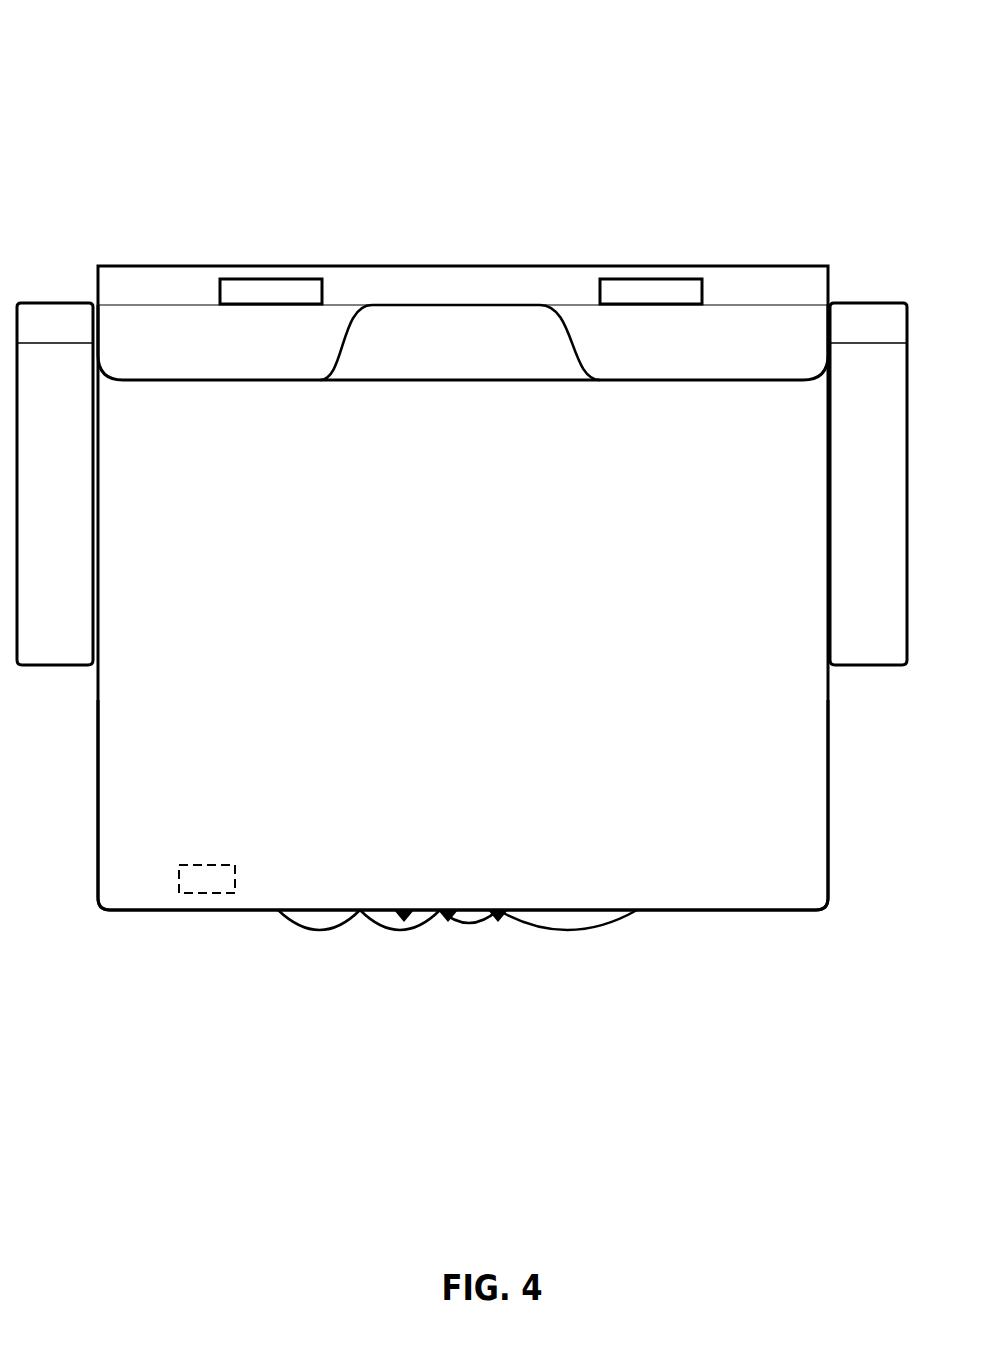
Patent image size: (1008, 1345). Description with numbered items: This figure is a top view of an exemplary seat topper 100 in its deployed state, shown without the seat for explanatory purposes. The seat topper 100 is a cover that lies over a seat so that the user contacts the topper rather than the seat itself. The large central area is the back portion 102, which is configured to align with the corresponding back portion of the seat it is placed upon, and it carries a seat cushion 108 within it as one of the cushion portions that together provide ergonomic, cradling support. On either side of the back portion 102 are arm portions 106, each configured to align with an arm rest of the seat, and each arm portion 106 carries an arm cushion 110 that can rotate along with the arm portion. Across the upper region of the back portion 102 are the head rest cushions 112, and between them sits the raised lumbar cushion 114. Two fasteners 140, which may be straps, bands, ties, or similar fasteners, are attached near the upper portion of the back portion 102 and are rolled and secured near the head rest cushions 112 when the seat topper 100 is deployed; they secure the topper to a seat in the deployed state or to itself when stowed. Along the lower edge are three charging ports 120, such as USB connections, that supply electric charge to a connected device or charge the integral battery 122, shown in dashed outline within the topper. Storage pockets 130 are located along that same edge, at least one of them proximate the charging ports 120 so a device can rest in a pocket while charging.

The seat topper 100 is at (141, 47).
The back portion 102 is at (405, 266).
The arm portions 106 is at (50, 303).
The seat cushion 108 is at (828, 828).
The arm cushions 110 is at (68, 667).
The head rest cushions 112 is at (150, 304).
The lumbar cushion 114 is at (512, 304).
The charging ports 120 is at (502, 917).
The battery 122 is at (212, 893).
The storage pockets 130 is at (315, 929).
The fasteners 140 is at (255, 280).